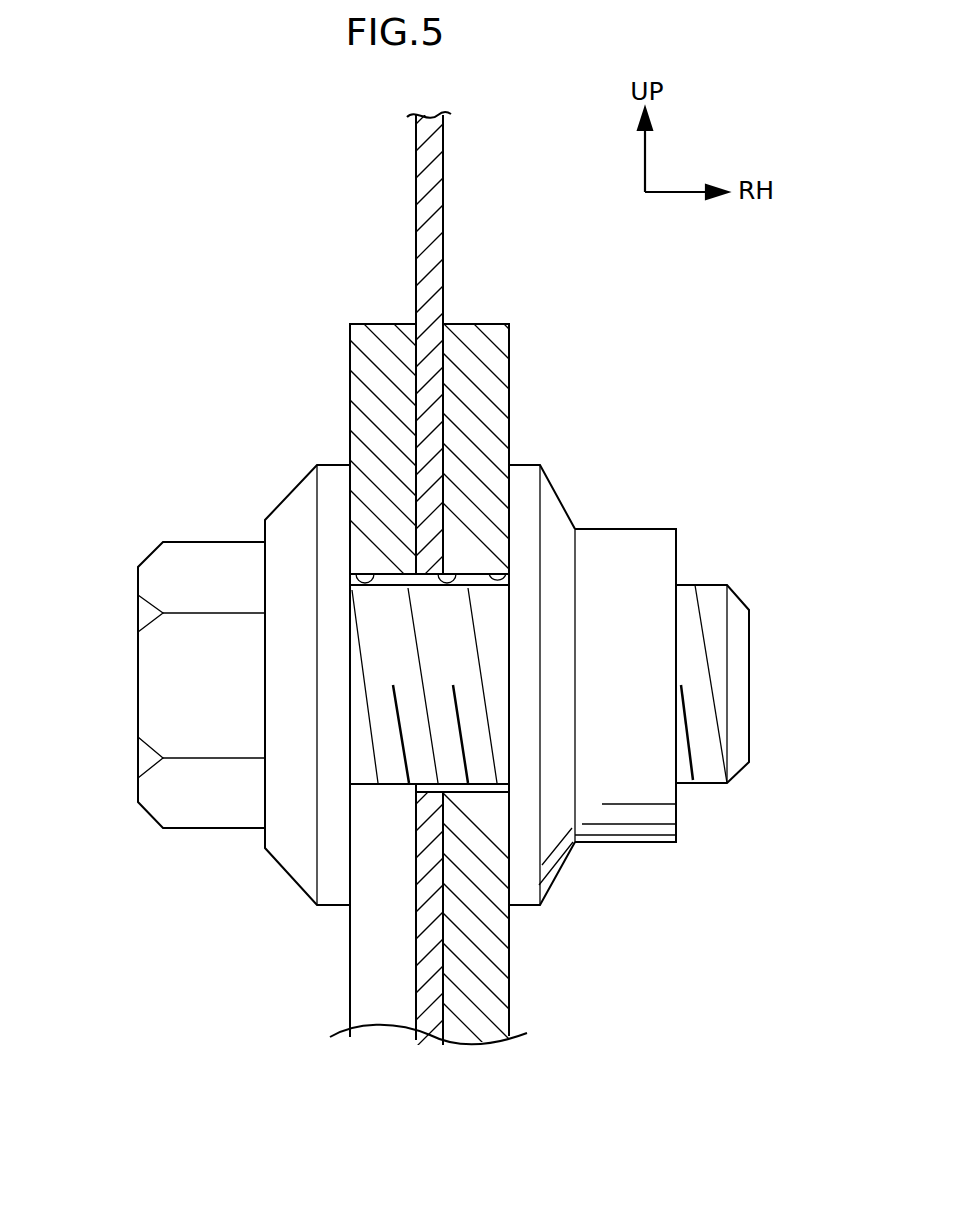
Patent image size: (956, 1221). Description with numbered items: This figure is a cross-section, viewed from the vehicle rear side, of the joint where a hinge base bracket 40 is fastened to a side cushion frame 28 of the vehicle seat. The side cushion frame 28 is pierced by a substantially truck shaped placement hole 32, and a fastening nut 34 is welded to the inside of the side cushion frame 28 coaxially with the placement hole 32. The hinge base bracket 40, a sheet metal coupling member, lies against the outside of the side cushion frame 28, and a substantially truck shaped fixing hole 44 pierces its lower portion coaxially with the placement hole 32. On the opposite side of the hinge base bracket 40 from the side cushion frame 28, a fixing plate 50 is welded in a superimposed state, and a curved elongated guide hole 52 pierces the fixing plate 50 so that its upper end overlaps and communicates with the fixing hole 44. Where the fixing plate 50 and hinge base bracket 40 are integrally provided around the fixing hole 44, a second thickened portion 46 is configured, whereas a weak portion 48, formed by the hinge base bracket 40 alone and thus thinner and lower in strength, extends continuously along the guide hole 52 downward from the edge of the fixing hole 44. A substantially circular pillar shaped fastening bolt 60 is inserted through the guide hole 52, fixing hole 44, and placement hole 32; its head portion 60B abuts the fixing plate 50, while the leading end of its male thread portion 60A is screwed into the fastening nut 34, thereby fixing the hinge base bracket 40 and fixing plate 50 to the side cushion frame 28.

The side cushion frame 28 is at (509, 324).
The placement hole 32 is at (507, 582).
The fastening nut 34 is at (558, 488).
The hinge base bracket 40 is at (445, 218).
The fixing hole 44 is at (452, 578).
The second thickened portion 46 is at (350, 378).
The weak portion 48 is at (412, 966).
The fixing plate 50 is at (350, 324).
The guide hole 52 is at (350, 572).
The fastening bolt 60 is at (138, 714).
The male thread portion 60A is at (712, 585).
The head portion 60B is at (207, 828).